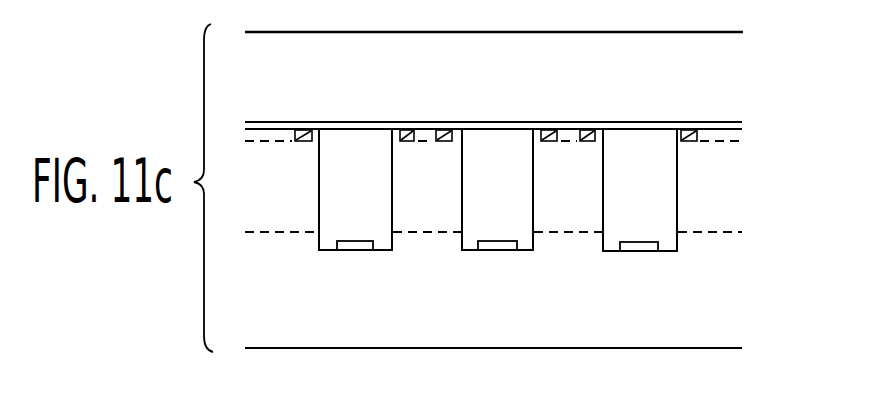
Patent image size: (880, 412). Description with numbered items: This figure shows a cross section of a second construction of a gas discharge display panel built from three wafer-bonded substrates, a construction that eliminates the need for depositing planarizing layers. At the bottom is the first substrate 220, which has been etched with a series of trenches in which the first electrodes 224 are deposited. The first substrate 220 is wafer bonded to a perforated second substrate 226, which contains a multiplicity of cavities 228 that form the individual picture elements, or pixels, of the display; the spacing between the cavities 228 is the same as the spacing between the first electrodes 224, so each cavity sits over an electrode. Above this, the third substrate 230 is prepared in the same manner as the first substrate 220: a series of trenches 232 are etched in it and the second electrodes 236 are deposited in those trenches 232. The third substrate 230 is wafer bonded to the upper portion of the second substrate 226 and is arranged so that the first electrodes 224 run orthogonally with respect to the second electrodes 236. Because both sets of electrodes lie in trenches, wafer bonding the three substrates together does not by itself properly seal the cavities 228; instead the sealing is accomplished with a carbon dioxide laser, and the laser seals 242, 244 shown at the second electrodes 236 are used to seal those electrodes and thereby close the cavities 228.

The first substrate 220 is at (690, 335).
The first electrodes 224 is at (497, 246).
The second substrate 226 is at (420, 163).
The cavities 228 is at (467, 248).
The third substrate 230 is at (527, 42).
The trenches 232 is at (262, 143).
The second electrodes 236 is at (272, 125).
The laser seal 242 is at (302, 129).
The laser seal 244 is at (410, 124).